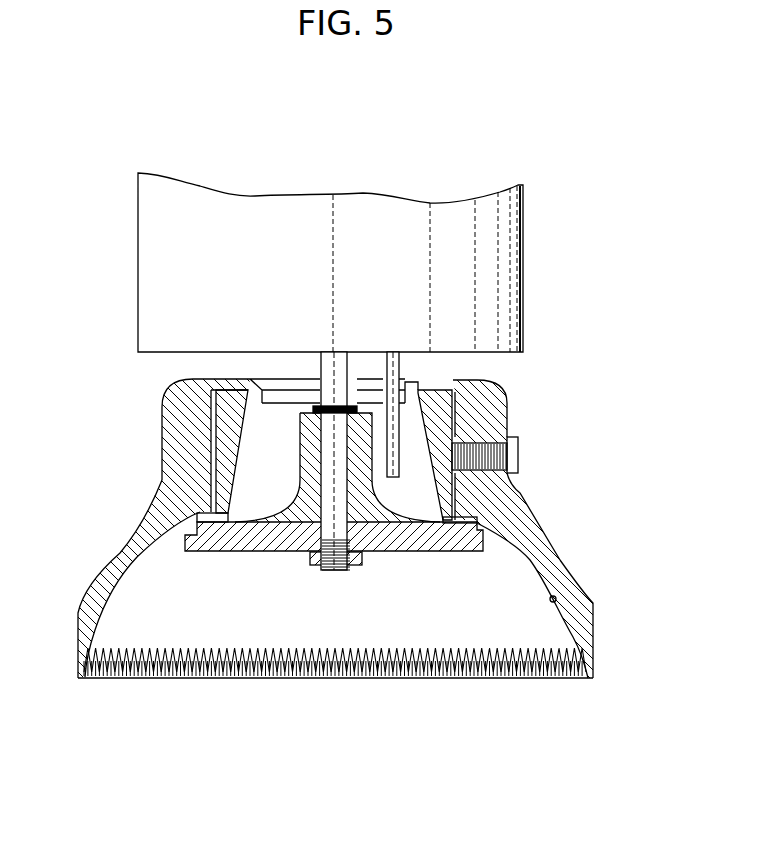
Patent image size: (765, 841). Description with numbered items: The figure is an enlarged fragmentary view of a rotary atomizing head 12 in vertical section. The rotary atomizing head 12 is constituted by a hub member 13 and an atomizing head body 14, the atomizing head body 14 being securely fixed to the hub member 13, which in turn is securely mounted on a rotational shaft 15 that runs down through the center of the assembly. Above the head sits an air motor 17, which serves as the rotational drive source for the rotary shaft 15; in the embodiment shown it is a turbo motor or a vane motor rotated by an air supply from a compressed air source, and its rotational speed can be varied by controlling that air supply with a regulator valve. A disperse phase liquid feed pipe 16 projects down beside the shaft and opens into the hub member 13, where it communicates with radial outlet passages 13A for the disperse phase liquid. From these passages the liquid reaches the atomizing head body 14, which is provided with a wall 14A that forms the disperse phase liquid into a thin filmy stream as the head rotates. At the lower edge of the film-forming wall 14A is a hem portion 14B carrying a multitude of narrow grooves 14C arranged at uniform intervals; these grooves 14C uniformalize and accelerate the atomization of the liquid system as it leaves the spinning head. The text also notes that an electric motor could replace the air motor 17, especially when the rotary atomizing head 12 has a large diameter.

The rotary atomizing head 12 is at (524, 488).
The hub member 13 is at (427, 543).
The radial outlet passages 13A is at (197, 516).
The atomizing head body 14 is at (99, 580).
The wall 14A is at (556, 599).
The hem portion 14B is at (312, 678).
The narrow grooves 14C is at (238, 678).
The rotational shaft 15 is at (328, 511).
The disperse phase liquid feed pipe 16 is at (405, 406).
The air motor 17 is at (248, 213).